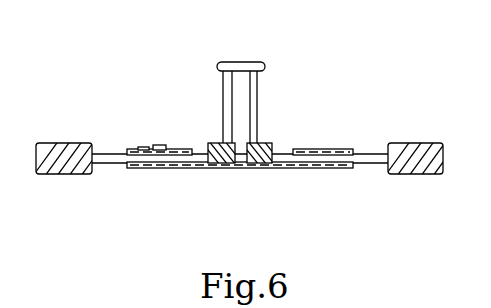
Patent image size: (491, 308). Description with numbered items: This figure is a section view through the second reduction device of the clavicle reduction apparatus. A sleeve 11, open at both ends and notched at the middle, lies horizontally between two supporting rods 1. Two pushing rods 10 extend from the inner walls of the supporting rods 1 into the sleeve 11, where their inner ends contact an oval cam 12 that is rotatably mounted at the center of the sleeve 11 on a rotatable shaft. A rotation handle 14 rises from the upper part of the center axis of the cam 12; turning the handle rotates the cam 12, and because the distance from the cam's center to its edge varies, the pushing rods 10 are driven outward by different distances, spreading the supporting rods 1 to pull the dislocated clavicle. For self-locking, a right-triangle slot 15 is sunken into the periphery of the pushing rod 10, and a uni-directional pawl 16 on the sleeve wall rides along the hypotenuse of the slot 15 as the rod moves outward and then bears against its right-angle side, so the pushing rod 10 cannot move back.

The supporting rod 1 is at (75, 148).
The pushing rod 10 is at (116, 158).
The sleeve 11 is at (190, 168).
The cam 12 is at (209, 142).
The rotation handle 14 is at (240, 61).
The slot 15 is at (140, 149).
The pawl 16 is at (161, 146).